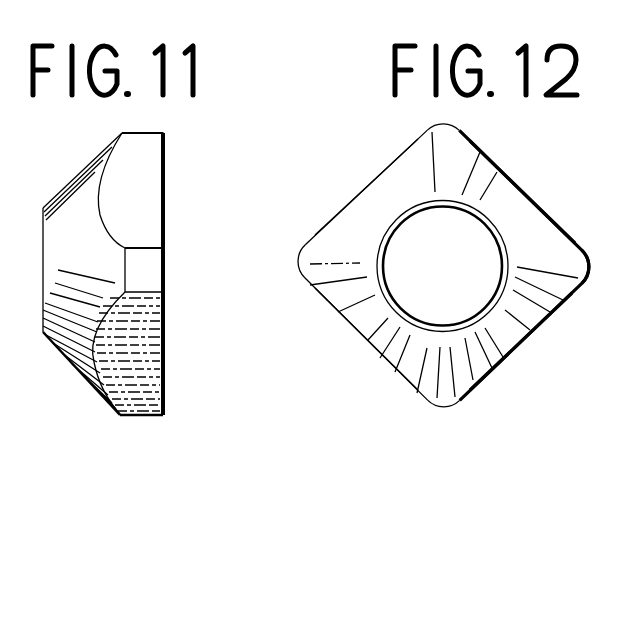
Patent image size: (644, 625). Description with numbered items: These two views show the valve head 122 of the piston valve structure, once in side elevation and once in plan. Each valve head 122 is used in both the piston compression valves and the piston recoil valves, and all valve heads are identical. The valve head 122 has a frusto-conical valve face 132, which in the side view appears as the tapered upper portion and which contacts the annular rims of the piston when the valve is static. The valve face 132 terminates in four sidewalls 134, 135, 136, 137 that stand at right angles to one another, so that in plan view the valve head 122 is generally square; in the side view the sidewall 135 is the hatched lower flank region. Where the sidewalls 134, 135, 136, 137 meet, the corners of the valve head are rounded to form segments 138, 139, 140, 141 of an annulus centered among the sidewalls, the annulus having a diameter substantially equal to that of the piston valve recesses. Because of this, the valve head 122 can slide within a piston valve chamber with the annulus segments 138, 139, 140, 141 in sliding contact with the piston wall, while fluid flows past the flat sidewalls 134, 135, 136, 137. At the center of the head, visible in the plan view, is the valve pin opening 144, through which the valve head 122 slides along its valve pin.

In FIG. 11, the valve head 122 is at (135, 183).
In FIG. 11, the frusto-conical valve face 132 is at (93, 240).
In FIG. 12, the frusto-conical valve face 132 is at (522, 248).
In FIG. 11, the sidewall 134 is at (135, 220).
In FIG. 12, the sidewall 134 is at (530, 188).
In FIG. 11, the sidewall 135 is at (140, 340).
In FIG. 12, the sidewall 135 is at (512, 360).
In FIG. 12, the sidewall 136 is at (352, 338).
In FIG. 12, the sidewall 137 is at (343, 200).
In FIG. 12, the annulus segment 138 is at (588, 268).
In FIG. 12, the annulus segment 139 is at (427, 407).
In FIG. 12, the annulus segment 140 is at (298, 270).
In FIG. 12, the annulus segment 141 is at (437, 125).
In FIG. 12, the valve pin opening 144 is at (385, 262).